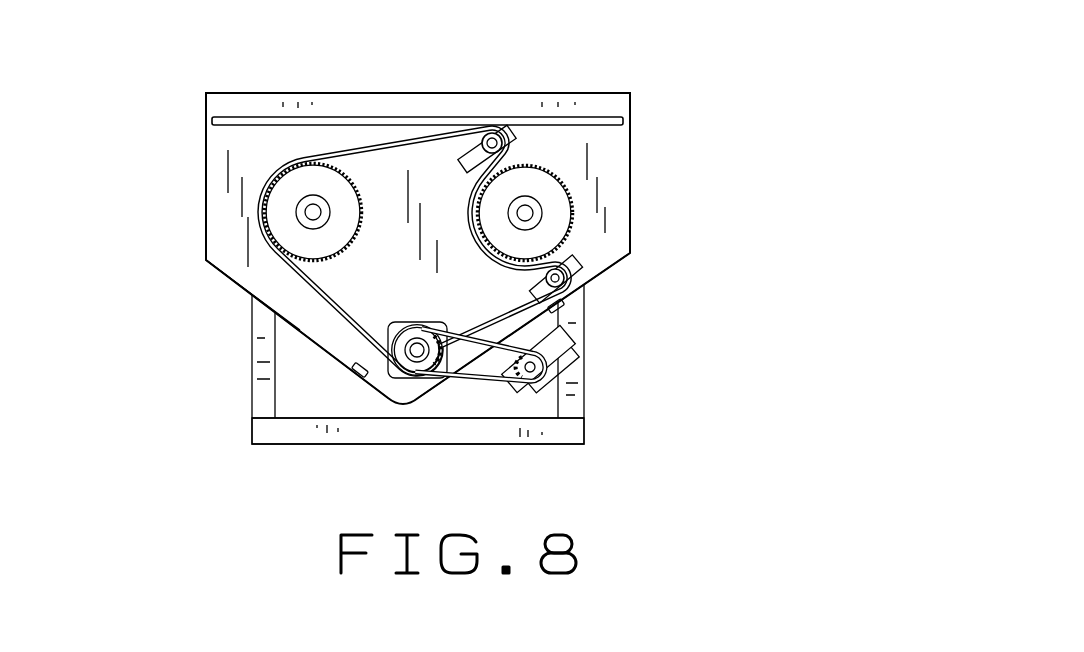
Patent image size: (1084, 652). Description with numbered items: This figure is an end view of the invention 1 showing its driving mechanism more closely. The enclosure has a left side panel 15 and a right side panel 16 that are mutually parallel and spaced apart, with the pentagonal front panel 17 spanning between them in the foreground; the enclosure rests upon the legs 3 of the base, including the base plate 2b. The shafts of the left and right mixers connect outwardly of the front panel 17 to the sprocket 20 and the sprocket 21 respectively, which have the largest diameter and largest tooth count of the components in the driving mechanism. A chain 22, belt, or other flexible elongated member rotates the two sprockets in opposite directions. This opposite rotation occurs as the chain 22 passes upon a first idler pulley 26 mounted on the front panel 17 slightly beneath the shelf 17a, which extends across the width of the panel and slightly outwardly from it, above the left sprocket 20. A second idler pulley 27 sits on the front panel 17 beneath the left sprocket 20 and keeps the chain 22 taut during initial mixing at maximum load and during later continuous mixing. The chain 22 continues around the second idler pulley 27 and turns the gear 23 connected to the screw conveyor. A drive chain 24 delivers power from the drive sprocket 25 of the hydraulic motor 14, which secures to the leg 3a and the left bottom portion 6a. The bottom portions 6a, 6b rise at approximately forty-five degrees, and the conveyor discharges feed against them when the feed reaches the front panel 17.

The paper feeding device 1 is at (203, 56).
The base plate 2b is at (366, 435).
The legs 3 is at (262, 400).
The leg 3a is at (578, 368).
The bottom portion 6a is at (600, 283).
The bottom portion 6b is at (238, 287).
The motor 14 is at (560, 388).
The left side panel 15 is at (630, 215).
The right side panel 16 is at (207, 225).
The front panel 17 is at (598, 145).
The shelf 17a is at (433, 118).
The sprocket 20 is at (525, 213).
The sprocket 21 is at (307, 210).
The chain 22 is at (366, 150).
The gear 23 is at (413, 365).
The drive chain 24 is at (487, 385).
The drive sprocket 25 is at (530, 370).
The first idler pulley 26 is at (498, 130).
The second idler pulley 27 is at (598, 278).